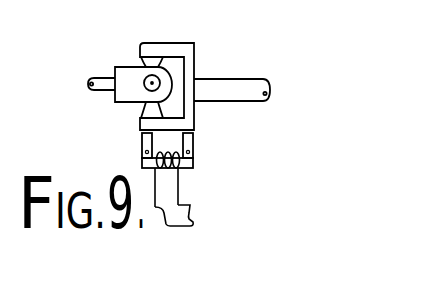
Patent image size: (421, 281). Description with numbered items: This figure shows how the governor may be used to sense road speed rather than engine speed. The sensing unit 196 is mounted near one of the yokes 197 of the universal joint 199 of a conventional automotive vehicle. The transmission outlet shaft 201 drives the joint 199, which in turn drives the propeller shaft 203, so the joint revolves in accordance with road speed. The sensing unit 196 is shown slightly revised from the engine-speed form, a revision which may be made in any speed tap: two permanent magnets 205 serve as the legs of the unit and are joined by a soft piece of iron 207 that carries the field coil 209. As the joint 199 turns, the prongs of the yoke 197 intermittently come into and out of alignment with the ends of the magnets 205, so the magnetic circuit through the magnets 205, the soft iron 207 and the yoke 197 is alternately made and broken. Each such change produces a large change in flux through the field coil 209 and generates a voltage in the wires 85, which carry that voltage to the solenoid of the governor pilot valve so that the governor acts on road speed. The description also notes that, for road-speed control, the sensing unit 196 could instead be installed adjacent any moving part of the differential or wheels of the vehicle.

The wires 85 is at (193, 224).
The sensing unit 196 is at (135, 159).
The yoke 197 is at (197, 63).
The universal joint 199 is at (156, 39).
The transmission outlet shaft 201 is at (103, 80).
The propeller shaft 203 is at (227, 101).
The permanent magnets 205 is at (193, 143).
The soft piece of iron 207 is at (193, 161).
The field coil 209 is at (166, 164).